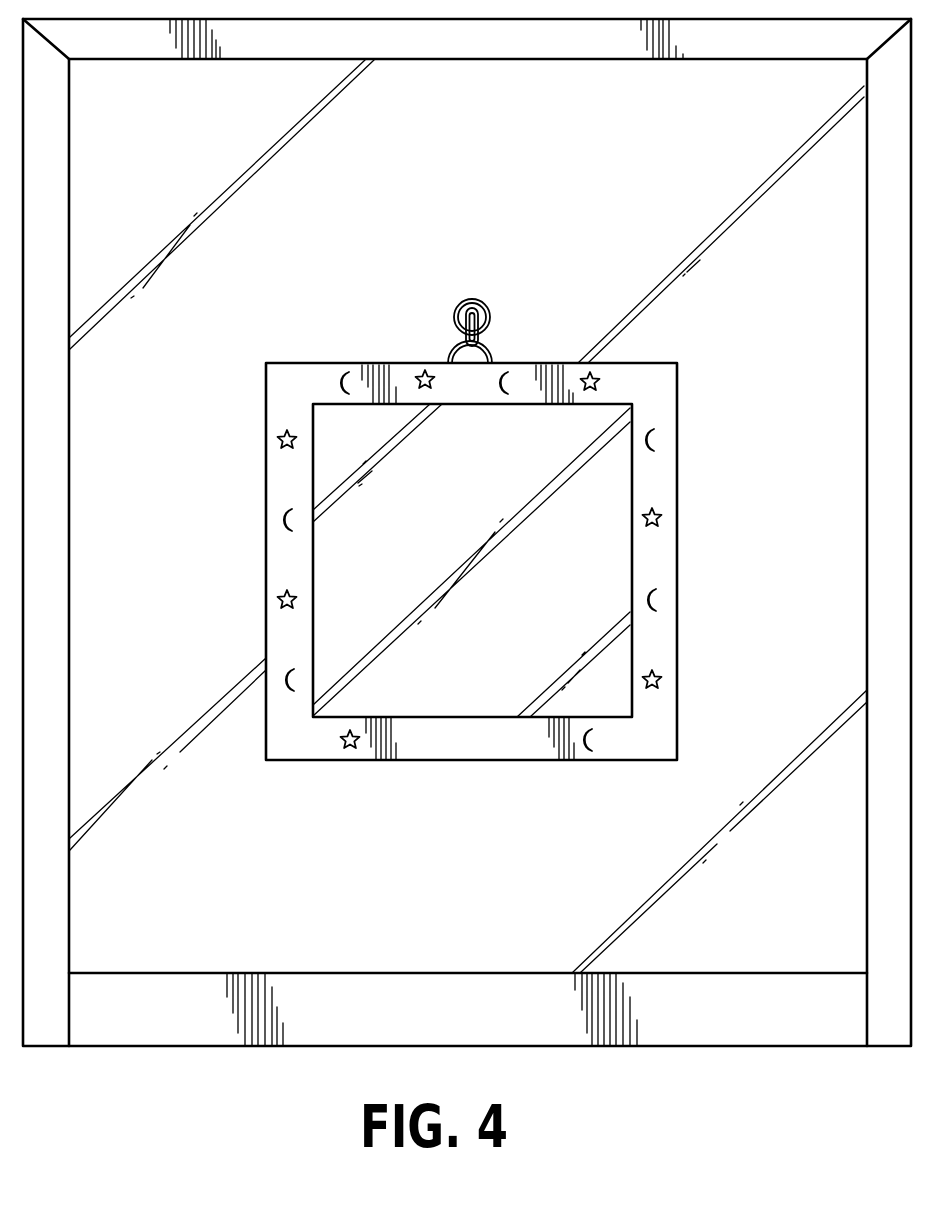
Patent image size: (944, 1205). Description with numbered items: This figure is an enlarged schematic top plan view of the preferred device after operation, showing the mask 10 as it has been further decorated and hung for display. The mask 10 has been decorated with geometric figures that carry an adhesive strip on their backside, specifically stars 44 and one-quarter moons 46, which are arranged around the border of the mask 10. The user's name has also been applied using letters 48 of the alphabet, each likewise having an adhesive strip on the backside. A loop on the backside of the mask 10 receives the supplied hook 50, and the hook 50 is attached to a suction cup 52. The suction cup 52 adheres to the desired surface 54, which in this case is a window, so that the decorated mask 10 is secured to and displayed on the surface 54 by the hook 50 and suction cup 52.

The mask 10 is at (677, 443).
The stars 44 is at (661, 520).
The one-quarter moons 46 is at (660, 602).
The letters 48 is at (422, 742).
The hook 50 is at (481, 320).
The suction cup 52 is at (482, 304).
The desired surface 54 is at (338, 207).